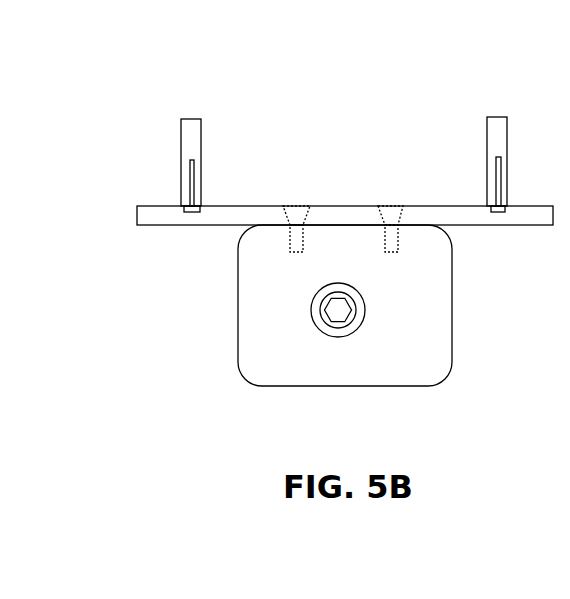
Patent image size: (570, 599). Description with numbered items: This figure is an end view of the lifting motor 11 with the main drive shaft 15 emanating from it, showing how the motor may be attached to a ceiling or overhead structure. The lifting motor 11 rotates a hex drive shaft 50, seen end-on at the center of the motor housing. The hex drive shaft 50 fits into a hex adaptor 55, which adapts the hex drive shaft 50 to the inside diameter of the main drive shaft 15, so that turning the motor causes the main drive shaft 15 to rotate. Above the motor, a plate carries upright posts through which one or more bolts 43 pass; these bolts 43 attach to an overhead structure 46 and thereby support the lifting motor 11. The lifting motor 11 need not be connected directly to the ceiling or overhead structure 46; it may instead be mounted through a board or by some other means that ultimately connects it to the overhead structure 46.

The lifting motor 11 is at (182, 351).
The main drive shaft 15 is at (325, 330).
The bolt 43 is at (191, 162).
The overhead structure 46 is at (190, 133).
The hex drive shaft 50 is at (338, 310).
The hex adaptor 55 is at (325, 300).